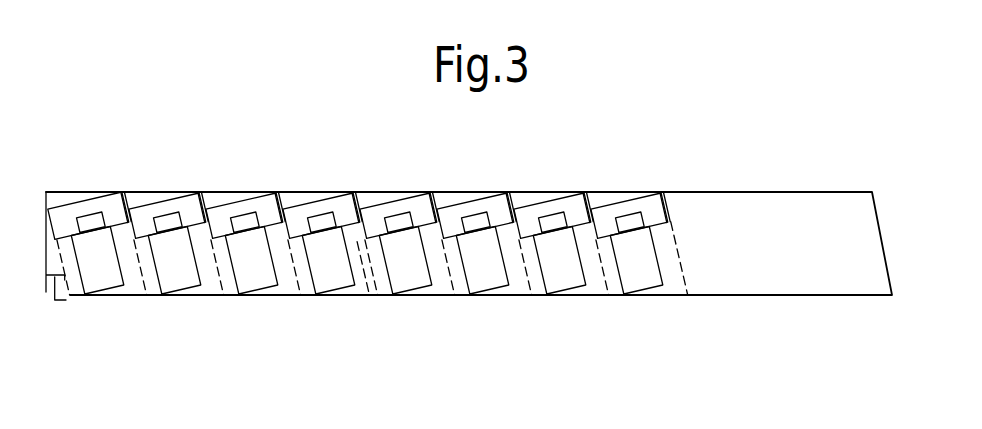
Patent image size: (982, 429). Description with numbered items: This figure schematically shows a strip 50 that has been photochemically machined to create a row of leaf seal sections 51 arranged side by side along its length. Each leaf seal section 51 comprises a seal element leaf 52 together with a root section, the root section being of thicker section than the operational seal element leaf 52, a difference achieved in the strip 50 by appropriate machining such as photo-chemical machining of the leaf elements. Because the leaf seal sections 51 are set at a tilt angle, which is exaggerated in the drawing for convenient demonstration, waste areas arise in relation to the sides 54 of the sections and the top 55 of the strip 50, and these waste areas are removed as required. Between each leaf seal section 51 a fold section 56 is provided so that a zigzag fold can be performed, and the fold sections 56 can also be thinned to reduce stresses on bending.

The strip 50 is at (842, 192).
The leaf seal section 51 is at (652, 193).
The seal element leaf 52 is at (101, 268).
The sides 54 is at (116, 212).
The top 55 is at (232, 192).
The fold section 56 is at (369, 302).